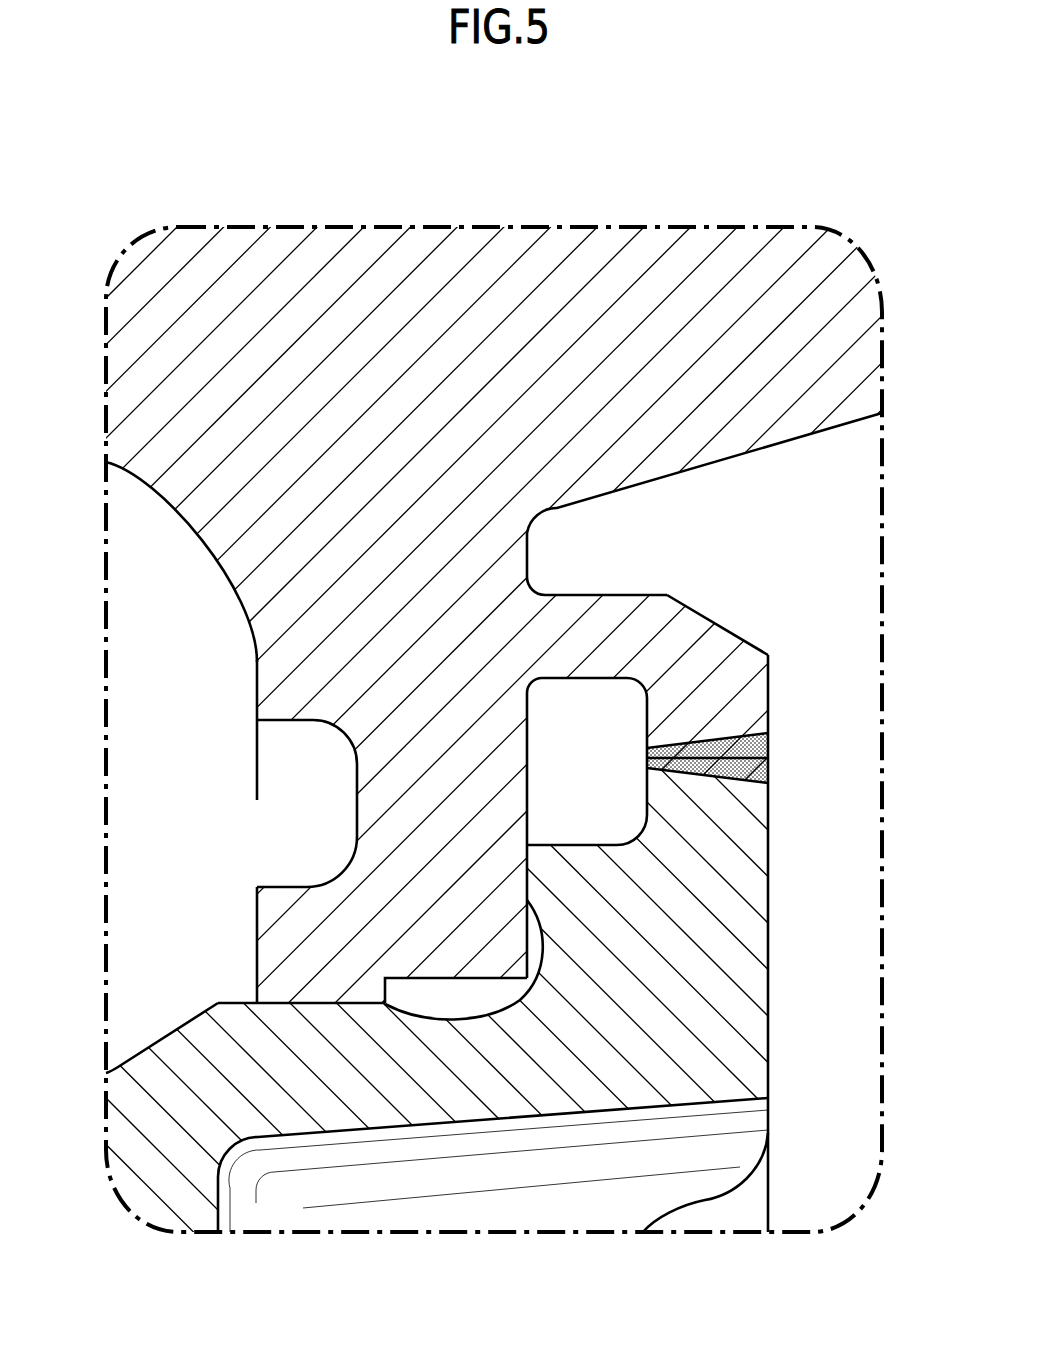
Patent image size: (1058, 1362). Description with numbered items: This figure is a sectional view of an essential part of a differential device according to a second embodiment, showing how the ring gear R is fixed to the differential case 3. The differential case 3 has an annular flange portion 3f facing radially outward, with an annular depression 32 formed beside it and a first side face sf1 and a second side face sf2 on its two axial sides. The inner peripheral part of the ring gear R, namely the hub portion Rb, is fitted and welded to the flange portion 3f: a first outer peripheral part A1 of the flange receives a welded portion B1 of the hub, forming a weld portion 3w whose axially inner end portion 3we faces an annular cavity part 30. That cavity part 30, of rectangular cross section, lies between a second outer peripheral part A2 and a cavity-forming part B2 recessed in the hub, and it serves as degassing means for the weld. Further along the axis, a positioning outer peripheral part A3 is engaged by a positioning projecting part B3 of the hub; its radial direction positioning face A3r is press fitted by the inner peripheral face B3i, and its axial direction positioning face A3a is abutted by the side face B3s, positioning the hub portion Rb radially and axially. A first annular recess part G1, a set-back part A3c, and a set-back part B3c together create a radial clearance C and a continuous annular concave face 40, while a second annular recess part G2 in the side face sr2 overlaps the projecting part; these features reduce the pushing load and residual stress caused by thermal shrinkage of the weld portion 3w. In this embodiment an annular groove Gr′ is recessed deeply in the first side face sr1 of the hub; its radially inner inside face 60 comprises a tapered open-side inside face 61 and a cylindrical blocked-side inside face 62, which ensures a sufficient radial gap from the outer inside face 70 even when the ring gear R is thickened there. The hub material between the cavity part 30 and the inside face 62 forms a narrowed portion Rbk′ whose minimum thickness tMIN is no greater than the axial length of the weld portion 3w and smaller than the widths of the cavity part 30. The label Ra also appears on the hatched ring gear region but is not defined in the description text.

The differential case 3 is at (774, 1047).
The annular cavity part 30 is at (598, 796).
The annular depression 32 is at (687, 1208).
The annular concave face 40 is at (538, 1157).
The inside face 60 is at (768, 556).
The inside face 61 is at (743, 644).
The inside face 62 is at (640, 594).
The inside face 70 is at (640, 487).
The weld portion 3w is at (773, 775).
The axially inner end portion of the weld portion 3we is at (647, 752).
The flange portion 3f is at (658, 1006).
The ring gear R is at (207, 545).
The housing region a Ra is at (498, 332).
The hub portion Rb is at (428, 620).
The narrowed portion Rbk′ is at (572, 607).
The annular groove Gr′ is at (720, 470).
The first side face sr1 is at (773, 683).
The side face sr2 is at (257, 700).
The first side face sf1 is at (769, 955).
The second side face sf2 is at (165, 1040).
The first annular recess part G1 is at (541, 942).
The second annular recess part G2 is at (357, 808).
The radial clearance C is at (471, 1015).
The first outer peripheral part A1 is at (700, 752).
The second outer peripheral part A2 is at (568, 844).
The positioning outer peripheral part A3 is at (322, 997).
The axial direction positioning face A3a is at (527, 878).
The part of the positioning outer peripheral part A3c is at (422, 1020).
The radial direction positioning face A3r is at (292, 1003).
The welded portion B1 is at (718, 750).
The cavity-forming part B2 is at (583, 679).
The positioning projecting part B3 is at (255, 903).
The part of the positioning projecting part B3c is at (432, 978).
The inner peripheral face B3i is at (292, 1003).
The side face B3s is at (530, 884).
The minimum thickness tMIN is at (605, 598).